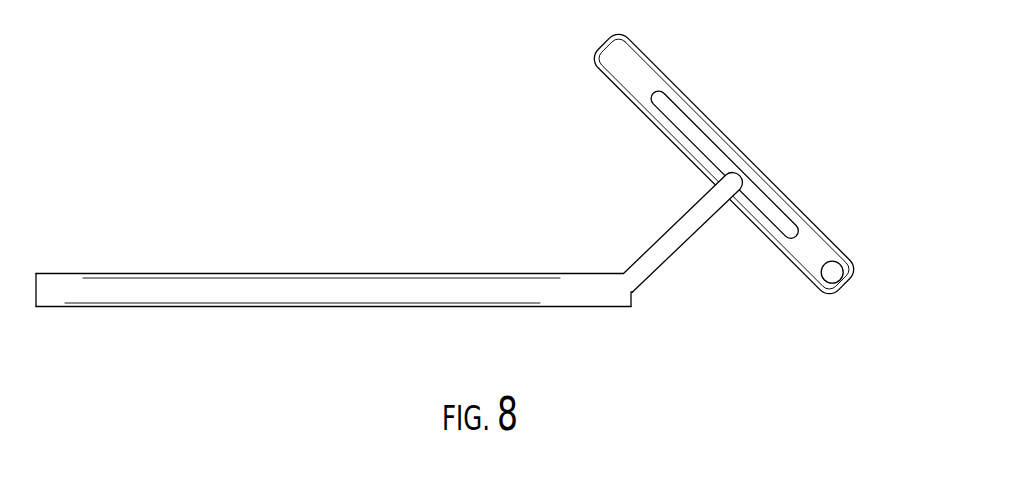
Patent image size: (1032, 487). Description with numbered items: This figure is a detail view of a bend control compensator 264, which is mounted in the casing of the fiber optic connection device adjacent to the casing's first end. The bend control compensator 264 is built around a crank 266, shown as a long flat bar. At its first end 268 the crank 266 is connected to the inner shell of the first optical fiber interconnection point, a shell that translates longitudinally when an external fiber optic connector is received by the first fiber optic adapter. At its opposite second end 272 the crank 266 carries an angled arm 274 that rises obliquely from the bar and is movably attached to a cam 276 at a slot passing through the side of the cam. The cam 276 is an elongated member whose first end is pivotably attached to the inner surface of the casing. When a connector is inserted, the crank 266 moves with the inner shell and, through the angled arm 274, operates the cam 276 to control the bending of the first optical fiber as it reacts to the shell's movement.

The bend control compensator 264 is at (245, 117).
The crank 266 is at (175, 273).
The first end 268 is at (36, 306).
The second end 272 is at (742, 176).
The angled arm 274 is at (648, 275).
The cam 276 is at (742, 175).